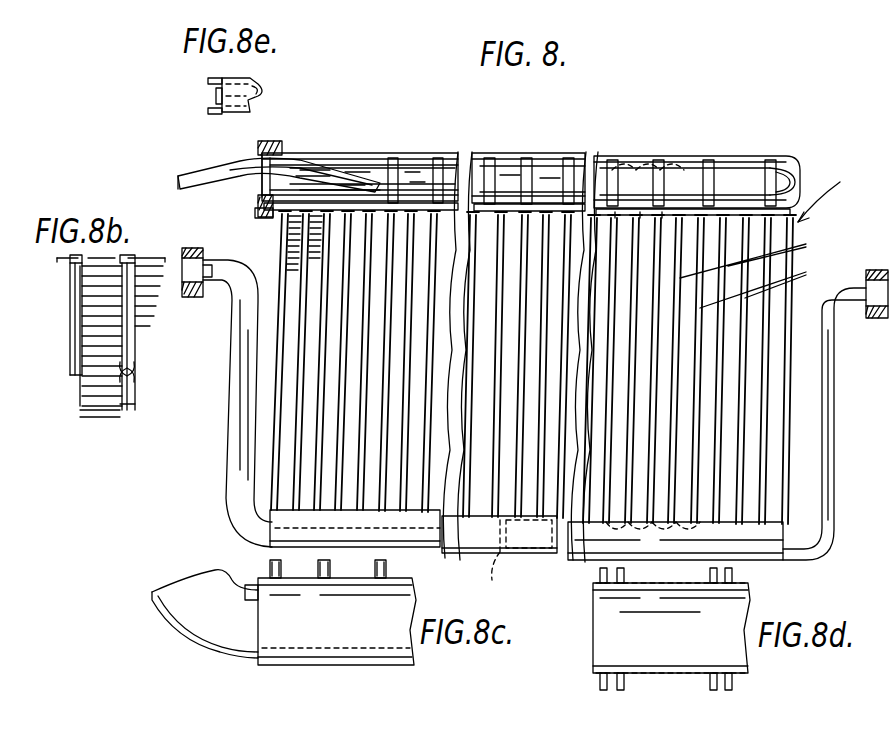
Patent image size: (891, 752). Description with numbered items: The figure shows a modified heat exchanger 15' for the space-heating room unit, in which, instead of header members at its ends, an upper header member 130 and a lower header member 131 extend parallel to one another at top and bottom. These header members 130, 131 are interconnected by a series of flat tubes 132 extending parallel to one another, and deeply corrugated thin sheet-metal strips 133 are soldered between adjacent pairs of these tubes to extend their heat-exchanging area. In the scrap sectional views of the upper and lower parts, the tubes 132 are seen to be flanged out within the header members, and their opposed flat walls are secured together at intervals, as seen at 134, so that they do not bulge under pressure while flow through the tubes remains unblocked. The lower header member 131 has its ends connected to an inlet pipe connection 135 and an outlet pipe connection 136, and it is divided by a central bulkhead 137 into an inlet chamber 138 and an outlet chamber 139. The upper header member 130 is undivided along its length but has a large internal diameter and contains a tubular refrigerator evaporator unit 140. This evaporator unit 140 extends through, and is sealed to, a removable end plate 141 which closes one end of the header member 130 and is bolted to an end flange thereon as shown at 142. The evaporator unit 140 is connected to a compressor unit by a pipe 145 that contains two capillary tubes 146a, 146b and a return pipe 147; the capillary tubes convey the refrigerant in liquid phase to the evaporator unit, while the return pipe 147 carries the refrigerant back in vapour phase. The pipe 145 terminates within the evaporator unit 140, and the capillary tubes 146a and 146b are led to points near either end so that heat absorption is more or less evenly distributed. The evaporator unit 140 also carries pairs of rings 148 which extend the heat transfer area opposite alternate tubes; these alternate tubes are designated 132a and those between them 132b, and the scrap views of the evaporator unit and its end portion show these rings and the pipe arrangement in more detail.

In FIG. 8, the modified heat exchanger 15' is at (826, 187).
In FIG. 8, the upper header member 130 is at (628, 160).
In FIG. 8B, the upper header member 130 is at (150, 250).
In FIG. 8, the lower header member 131 is at (470, 560).
In FIG. 8, the flat tubes 132 is at (320, 268).
In FIG. 8B, the flat tubes 132 is at (128, 325).
In FIG. 8C, the flat tubes 132 is at (318, 578).
In FIG. 8, the alternate tubes 132a is at (771, 252).
In FIG. 8, the intermediate tubes 132b is at (781, 281).
In FIG. 8, the corrugated sheet-metal strips 133 is at (288, 240).
In FIG. 8B, the corrugated sheet-metal strips 133 is at (97, 412).
In FIG. 8B, the secured wall points 134 is at (134, 373).
In FIG. 8, the inlet pipe connection 135 is at (836, 372).
In FIG. 8, the outlet pipe connection 136 is at (230, 418).
In FIG. 8C, the outlet pipe connection 136 is at (158, 610).
In FIG. 8, the central bulkhead 137 is at (497, 563).
In FIG. 8, the inlet chamber 138 is at (537, 552).
In FIG. 8, the outlet chamber 139 is at (268, 535).
In FIG. 8C, the outlet chamber 139 is at (322, 648).
In FIG. 8, the refrigerator evaporator unit 140 is at (405, 162).
In FIG. 8, the removable end plate 141 is at (262, 178).
In FIG. 8, the bolted end flange connection 142 is at (290, 128).
In FIG. 8, the pipe 145 is at (205, 178).
In FIG. 8E, the pipe 145 is at (252, 84).
In FIG. 8, the capillary tube 146a is at (348, 170).
In FIG. 8E, the capillary tube 146a is at (210, 80).
In FIG. 8, the capillary tube 146b is at (366, 185).
In FIG. 8E, the capillary tube 146b is at (210, 112).
In FIG. 8E, the return pipe 147 is at (216, 100).
In FIG. 8, the rings 148 is at (530, 165).